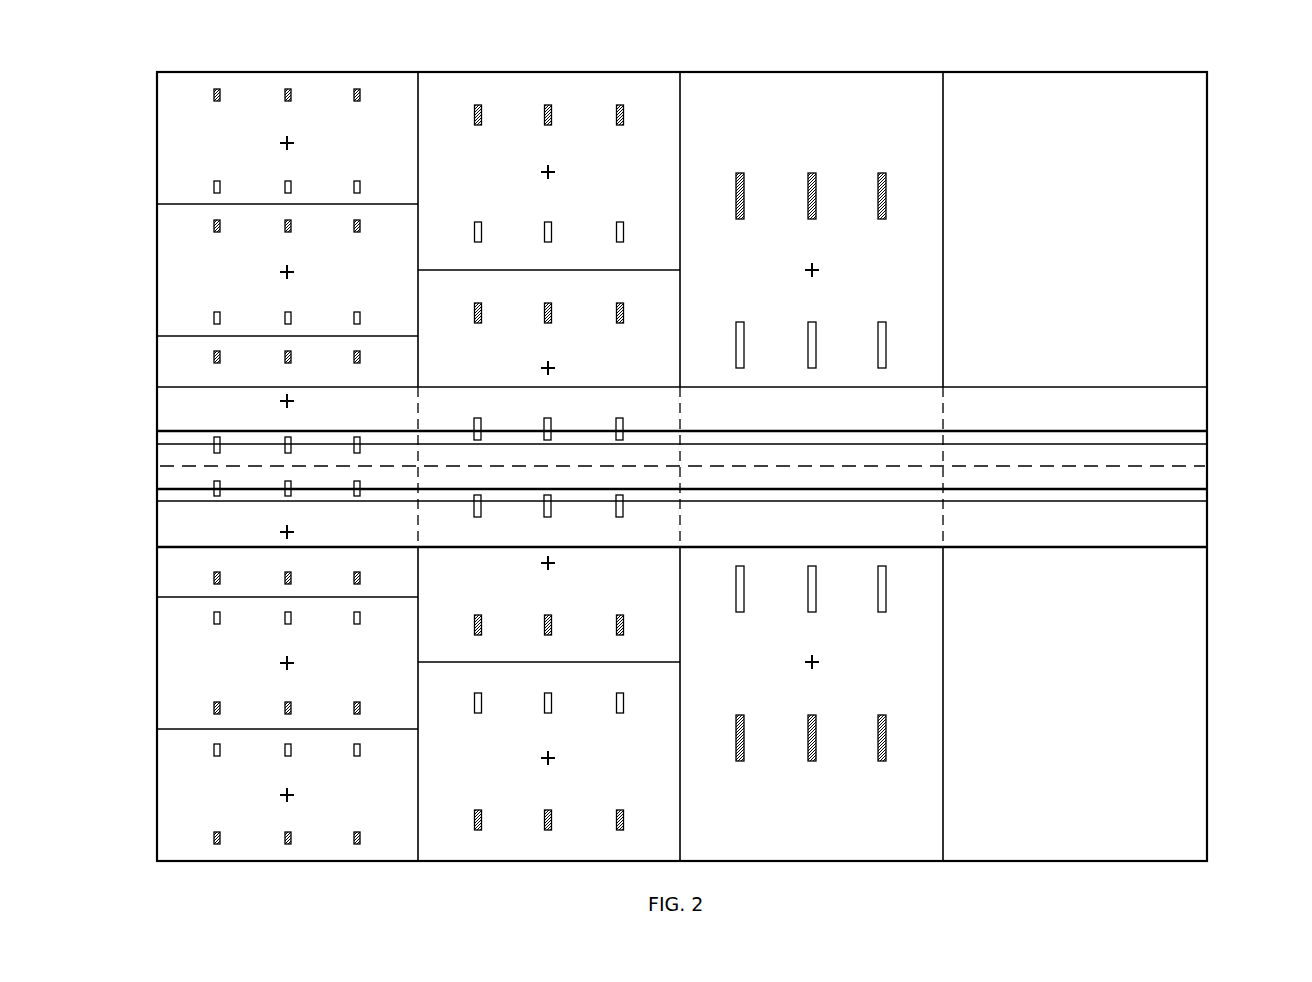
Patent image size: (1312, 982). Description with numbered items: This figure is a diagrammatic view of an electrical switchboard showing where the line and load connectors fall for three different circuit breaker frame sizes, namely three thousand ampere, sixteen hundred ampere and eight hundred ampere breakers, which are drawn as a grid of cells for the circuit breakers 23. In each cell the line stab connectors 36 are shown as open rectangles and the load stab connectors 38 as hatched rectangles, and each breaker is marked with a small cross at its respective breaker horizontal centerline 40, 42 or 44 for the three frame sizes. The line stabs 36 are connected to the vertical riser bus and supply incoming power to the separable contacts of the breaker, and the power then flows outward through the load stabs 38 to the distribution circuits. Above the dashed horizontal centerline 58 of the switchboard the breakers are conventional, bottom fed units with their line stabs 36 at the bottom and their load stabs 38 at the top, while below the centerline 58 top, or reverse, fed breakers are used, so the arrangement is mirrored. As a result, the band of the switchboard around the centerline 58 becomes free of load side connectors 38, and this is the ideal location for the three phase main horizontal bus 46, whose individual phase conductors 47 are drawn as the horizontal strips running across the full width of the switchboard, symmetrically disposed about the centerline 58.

The circuit breaker 23 is at (164, 142).
The line stab connector 36 is at (220, 185).
The load stab connector 38 is at (220, 97).
The breaker horizontal centerline 40 is at (818, 266).
The breaker horizontal centerline 42 is at (548, 170).
The breaker horizontal centerline 44 is at (283, 140).
The horizontal bus 46 is at (1290, 487).
The phase conductor 47 is at (1200, 410).
The horizontal centerline 58 is at (166, 468).